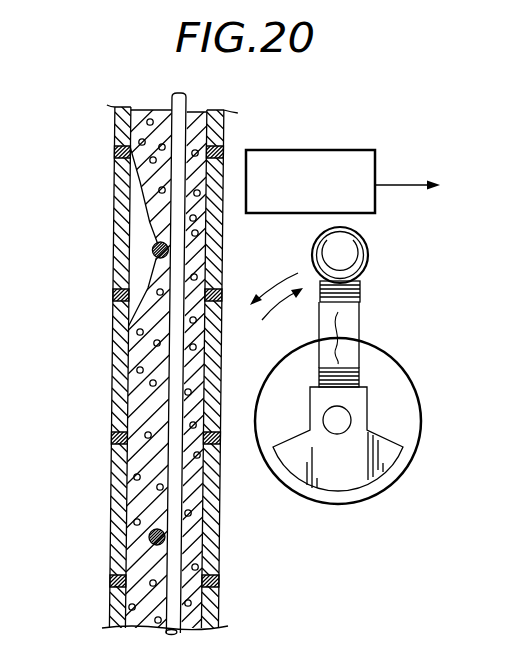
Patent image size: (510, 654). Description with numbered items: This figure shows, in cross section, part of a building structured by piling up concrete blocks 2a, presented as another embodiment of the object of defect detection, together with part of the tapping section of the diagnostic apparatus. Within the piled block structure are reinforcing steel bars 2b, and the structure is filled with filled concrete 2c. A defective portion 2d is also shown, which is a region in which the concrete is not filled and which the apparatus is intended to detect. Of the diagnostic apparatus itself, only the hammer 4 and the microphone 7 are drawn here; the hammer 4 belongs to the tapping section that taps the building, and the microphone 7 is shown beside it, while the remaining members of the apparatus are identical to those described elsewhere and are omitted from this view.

The concrete blocks 2a is at (126, 370).
The reinforcing steel bars 2b is at (148, 539).
The filled concrete 2c is at (137, 411).
The defective portion 2d is at (139, 226).
The hammer 4 is at (368, 253).
The microphone 7 is at (328, 150).